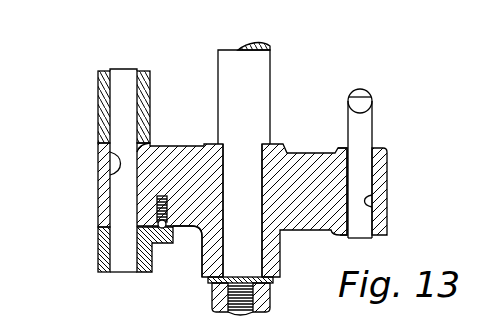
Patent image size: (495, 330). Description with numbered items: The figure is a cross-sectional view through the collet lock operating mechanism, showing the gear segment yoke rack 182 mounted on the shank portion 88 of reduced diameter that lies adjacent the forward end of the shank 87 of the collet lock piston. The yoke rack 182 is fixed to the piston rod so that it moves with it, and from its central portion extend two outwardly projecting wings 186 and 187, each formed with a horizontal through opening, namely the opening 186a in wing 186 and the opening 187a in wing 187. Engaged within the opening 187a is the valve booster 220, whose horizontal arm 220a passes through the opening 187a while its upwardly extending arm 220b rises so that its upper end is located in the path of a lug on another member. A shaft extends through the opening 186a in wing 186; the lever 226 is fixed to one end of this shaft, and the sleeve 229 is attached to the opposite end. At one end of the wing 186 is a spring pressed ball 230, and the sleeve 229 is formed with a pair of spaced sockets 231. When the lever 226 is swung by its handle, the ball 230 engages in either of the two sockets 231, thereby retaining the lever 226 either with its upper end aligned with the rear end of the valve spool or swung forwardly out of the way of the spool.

The shank 87 is at (259, 73).
The shank portion of reduced diameter 88 is at (240, 252).
The gear segment yoke rack 182 is at (303, 130).
The wing 186 is at (98, 201).
The through opening 186a is at (98, 149).
The wing 187 is at (390, 170).
The through opening 187a is at (373, 202).
The valve booster 220 is at (366, 85).
The horizontal arm 220a is at (361, 126).
The upwardly extending arm 220b is at (368, 92).
The lever 226 is at (97, 89).
The sleeve 229 is at (98, 257).
The spring pressed ball 230 is at (192, 227).
The sockets 231 is at (160, 229).